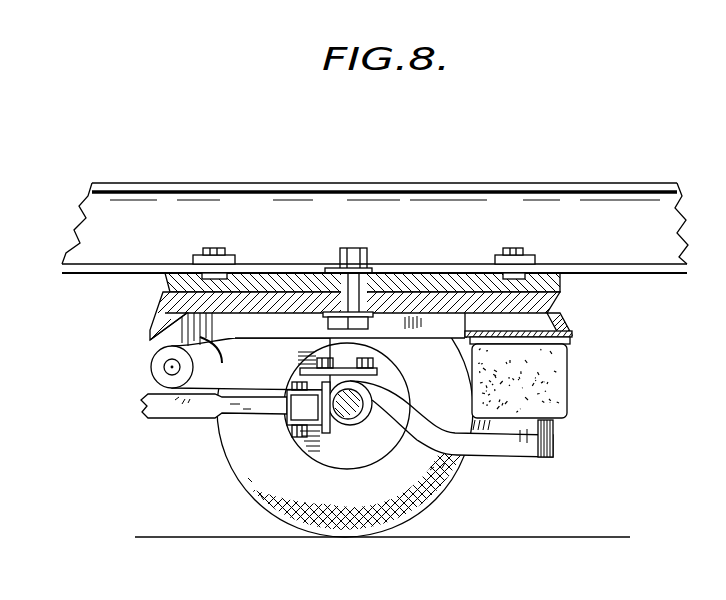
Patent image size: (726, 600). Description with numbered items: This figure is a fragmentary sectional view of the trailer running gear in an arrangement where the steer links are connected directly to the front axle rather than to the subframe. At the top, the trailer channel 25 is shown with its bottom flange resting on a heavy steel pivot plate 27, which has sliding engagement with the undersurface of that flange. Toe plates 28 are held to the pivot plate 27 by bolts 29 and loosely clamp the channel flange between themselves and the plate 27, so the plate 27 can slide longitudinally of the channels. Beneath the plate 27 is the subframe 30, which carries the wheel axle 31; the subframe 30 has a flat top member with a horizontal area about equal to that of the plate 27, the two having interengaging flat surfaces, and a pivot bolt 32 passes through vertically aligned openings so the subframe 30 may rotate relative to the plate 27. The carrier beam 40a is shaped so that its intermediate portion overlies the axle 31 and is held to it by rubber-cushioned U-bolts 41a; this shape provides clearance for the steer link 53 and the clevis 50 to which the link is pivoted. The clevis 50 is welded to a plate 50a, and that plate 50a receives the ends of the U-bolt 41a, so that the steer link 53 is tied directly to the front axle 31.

The channel 25 is at (583, 190).
The pivot plate 27 is at (562, 285).
The toe plate 28 is at (226, 259).
The bolt 29 is at (193, 253).
The subframe 30 is at (568, 316).
The wheel axle 31 is at (349, 412).
The pivot bolt 32 is at (352, 252).
The carrier beam 40a is at (428, 445).
The U-bolt 41a is at (368, 398).
The clevis 50 is at (290, 427).
The plate 50a is at (321, 432).
The steer link 53 is at (170, 413).